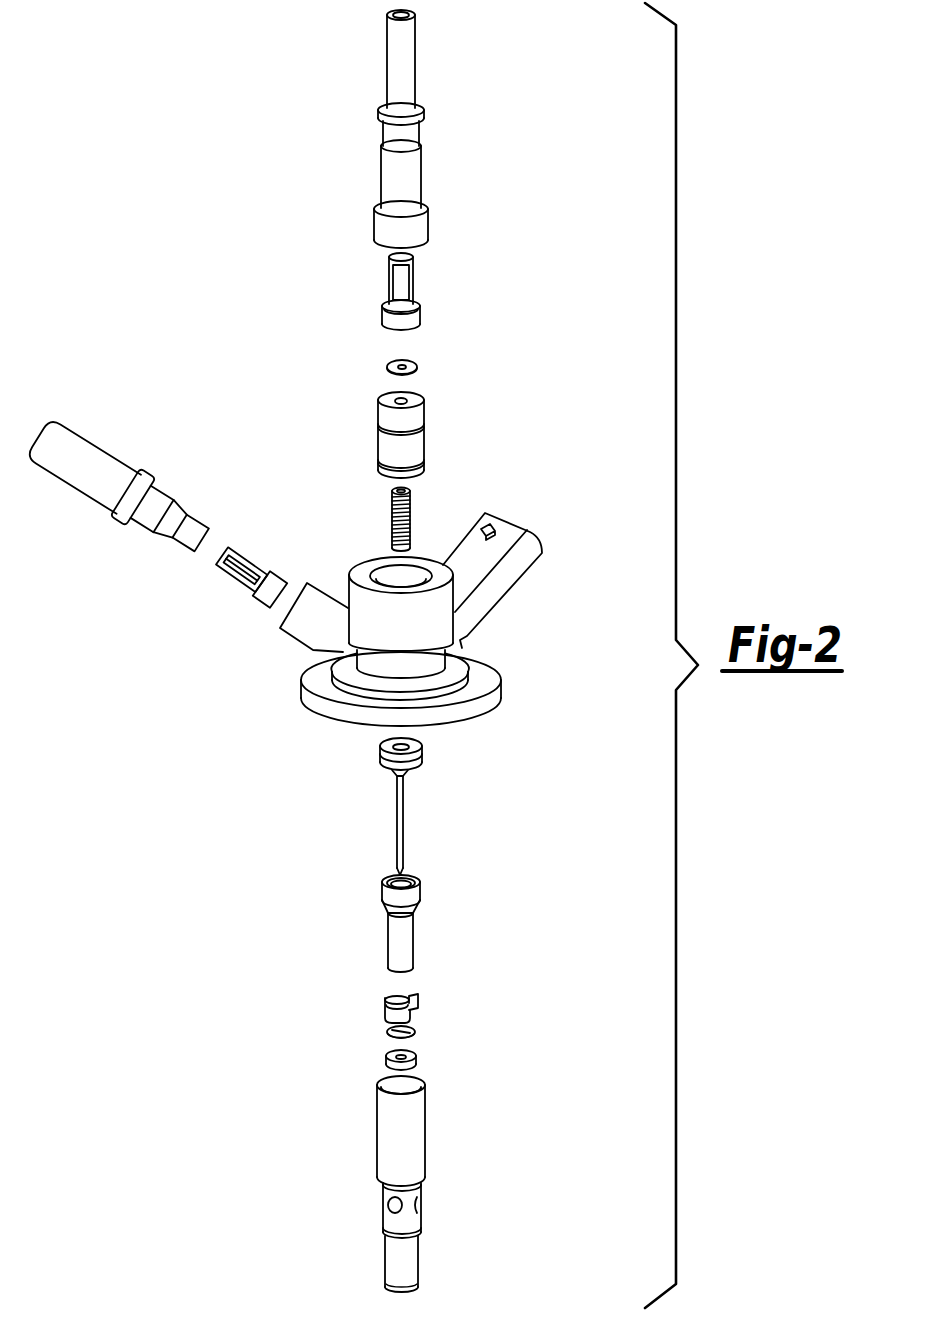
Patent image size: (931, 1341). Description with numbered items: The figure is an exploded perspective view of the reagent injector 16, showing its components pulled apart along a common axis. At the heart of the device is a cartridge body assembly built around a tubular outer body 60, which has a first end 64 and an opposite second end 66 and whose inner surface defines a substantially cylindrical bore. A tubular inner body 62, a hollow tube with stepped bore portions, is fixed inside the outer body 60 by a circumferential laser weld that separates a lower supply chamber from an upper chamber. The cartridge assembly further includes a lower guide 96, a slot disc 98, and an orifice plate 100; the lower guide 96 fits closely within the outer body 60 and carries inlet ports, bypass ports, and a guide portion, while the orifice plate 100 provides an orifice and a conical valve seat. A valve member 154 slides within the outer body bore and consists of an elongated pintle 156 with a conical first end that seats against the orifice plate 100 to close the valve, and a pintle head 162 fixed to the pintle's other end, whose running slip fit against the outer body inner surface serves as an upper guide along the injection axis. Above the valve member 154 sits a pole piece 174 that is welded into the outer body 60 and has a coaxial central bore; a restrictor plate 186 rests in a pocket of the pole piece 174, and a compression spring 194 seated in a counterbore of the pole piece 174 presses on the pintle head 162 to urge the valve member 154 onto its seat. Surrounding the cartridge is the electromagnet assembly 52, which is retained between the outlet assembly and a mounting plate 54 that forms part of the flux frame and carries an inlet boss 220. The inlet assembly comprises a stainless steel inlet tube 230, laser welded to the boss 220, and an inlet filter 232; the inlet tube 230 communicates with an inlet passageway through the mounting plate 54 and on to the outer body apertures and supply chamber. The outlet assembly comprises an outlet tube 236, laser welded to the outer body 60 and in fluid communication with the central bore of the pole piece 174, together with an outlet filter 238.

The reagent injector 16 is at (158, 693).
The electromagnet assembly 52 is at (510, 591).
The mounting plate 54 is at (310, 698).
The tubular outer body 60 is at (378, 1111).
The tubular inner body 62 is at (383, 929).
The first end 64 is at (415, 1278).
The second end 66 is at (388, 1083).
The lower guide 96 is at (418, 1008).
The slot disc 98 is at (415, 1032).
The orifice plate 100 is at (415, 1066).
The valve member 154 is at (397, 825).
The pintle 156 is at (403, 847).
The pintle head 162 is at (420, 757).
The pole piece 174 is at (420, 440).
The restrictor plate 186 is at (412, 368).
The compression spring 194 is at (394, 521).
The inlet boss 220 is at (313, 594).
The inlet tube 230 is at (126, 470).
The inlet filter 232 is at (233, 555).
The outlet tube 236 is at (413, 185).
The outlet filter 238 is at (405, 290).